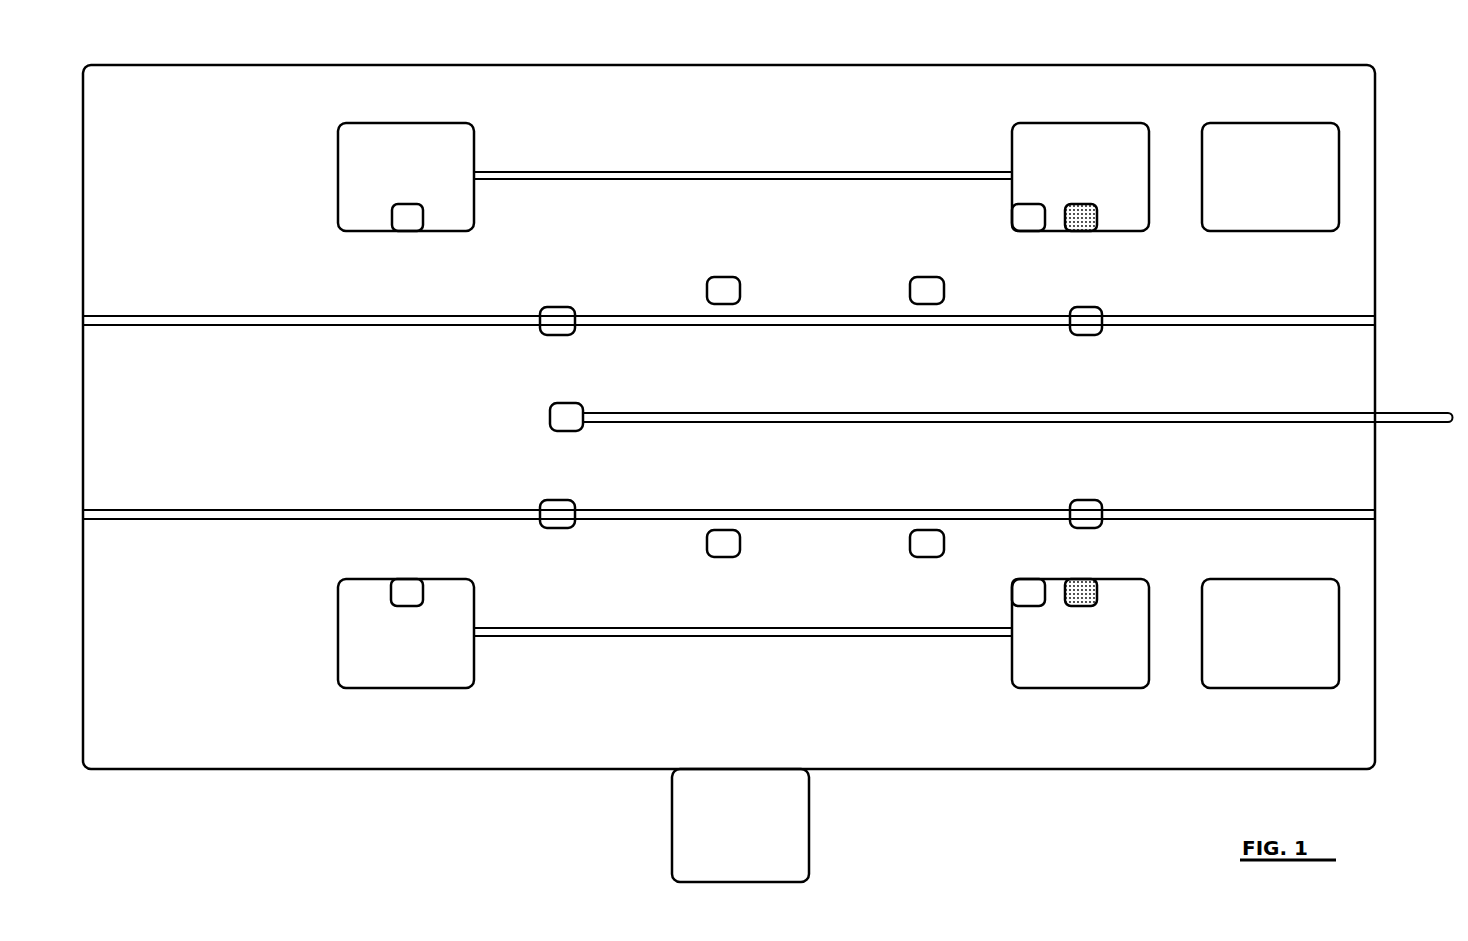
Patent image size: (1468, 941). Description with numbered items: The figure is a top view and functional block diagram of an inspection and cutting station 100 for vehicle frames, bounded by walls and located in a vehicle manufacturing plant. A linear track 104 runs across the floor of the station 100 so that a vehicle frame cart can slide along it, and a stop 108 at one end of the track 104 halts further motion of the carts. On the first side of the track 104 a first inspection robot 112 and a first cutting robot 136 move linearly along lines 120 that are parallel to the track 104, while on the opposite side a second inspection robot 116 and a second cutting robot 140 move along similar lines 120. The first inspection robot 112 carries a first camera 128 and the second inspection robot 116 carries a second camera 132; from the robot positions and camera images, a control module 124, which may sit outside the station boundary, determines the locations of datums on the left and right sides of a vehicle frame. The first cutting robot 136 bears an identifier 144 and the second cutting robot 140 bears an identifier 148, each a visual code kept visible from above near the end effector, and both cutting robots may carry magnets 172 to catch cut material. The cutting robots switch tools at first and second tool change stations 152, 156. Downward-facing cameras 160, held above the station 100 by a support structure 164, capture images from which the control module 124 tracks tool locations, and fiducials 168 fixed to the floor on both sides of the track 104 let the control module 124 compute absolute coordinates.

The inspection and cutting station 100 is at (408, 64).
The track 104 is at (968, 412).
The stop 108 is at (552, 403).
The first inspection robot 112 is at (347, 122).
The second inspection robot 116 is at (337, 593).
The lines 120 is at (743, 171).
The control module 124 is at (681, 770).
The first camera 128 is at (393, 231).
The second camera 132 is at (392, 580).
The first cutting robot 136 is at (1022, 122).
The second cutting robot 140 is at (1020, 578).
The identifier 144 is at (1089, 232).
The identifier 148 is at (1098, 580).
The first tool change station 152 is at (1211, 122).
The second tool change station 156 is at (1211, 578).
The cameras 160 is at (543, 312).
The support structure 164 is at (733, 315).
The fiducials 168 is at (707, 280).
The magnets 172 is at (1012, 215).